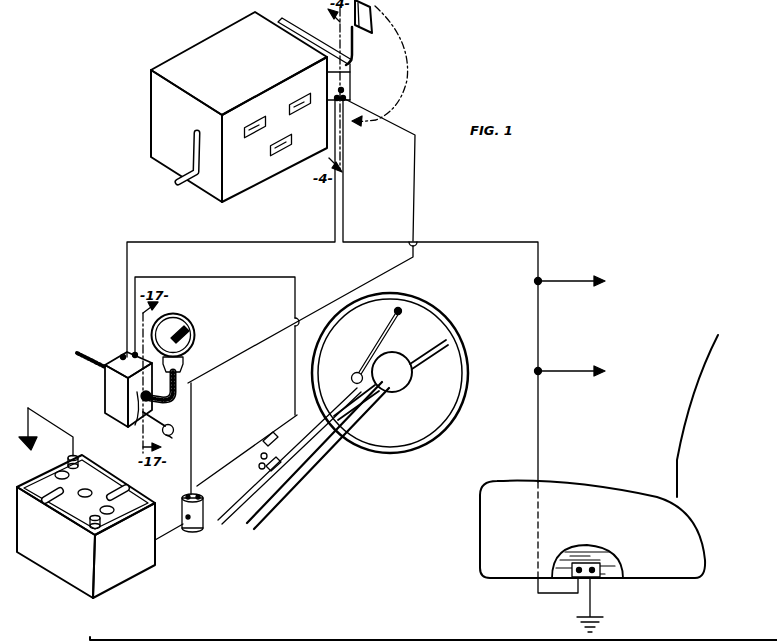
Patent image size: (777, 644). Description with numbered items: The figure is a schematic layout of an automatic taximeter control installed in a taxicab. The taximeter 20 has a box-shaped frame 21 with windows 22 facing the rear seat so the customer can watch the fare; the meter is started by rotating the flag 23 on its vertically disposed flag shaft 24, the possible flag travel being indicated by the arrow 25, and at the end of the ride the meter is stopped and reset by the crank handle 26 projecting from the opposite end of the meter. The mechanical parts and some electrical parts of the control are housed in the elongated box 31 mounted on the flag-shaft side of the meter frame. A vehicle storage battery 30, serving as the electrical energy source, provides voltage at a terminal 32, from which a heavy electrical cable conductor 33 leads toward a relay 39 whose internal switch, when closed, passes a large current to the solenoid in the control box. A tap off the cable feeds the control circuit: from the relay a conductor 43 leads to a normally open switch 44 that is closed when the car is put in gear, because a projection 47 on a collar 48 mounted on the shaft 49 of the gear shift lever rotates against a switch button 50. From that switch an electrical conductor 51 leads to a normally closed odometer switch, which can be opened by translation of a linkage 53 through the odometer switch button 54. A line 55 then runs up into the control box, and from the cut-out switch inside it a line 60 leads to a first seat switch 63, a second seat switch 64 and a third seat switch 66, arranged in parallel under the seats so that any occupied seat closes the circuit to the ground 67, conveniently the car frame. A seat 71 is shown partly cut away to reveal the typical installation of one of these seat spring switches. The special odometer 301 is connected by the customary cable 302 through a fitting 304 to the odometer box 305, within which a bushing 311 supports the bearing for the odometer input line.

The taximeter 20 is at (180, 54).
The box-shaped frame 21 is at (244, 79).
The windows 22 is at (254, 138).
The flag 23 is at (373, 12).
The flag shaft 24 is at (354, 52).
The arrow 25 is at (408, 72).
The crank handle 26 is at (193, 150).
The battery 30 is at (66, 551).
The box 31 is at (312, 34).
The terminal 32 is at (96, 530).
The heavy electrical cable conductor 33 is at (417, 185).
The relay 39 is at (202, 520).
The conductor 43 is at (228, 462).
The switch 44 is at (254, 457).
The projection 47 is at (262, 469).
The collar 48 is at (281, 466).
The shaft of gear shift lever 49 is at (314, 436).
The switch button 50 is at (276, 436).
The electrical conductor 51 is at (254, 280).
The linkage 53 is at (170, 425).
The odometer switch button 54 is at (178, 445).
The line 55 is at (284, 240).
The line 60 is at (468, 242).
The first seat switch 63 is at (596, 284).
The second seat switch 64 is at (598, 363).
The third seat switch 66 is at (602, 583).
The ground 67 is at (603, 624).
The seat 71 is at (597, 485).
The special odometer 301 is at (192, 337).
The cable 302 is at (184, 370).
The fitting 304 is at (129, 420).
The odometer box 305 is at (106, 398).
The bushing 311 is at (176, 326).